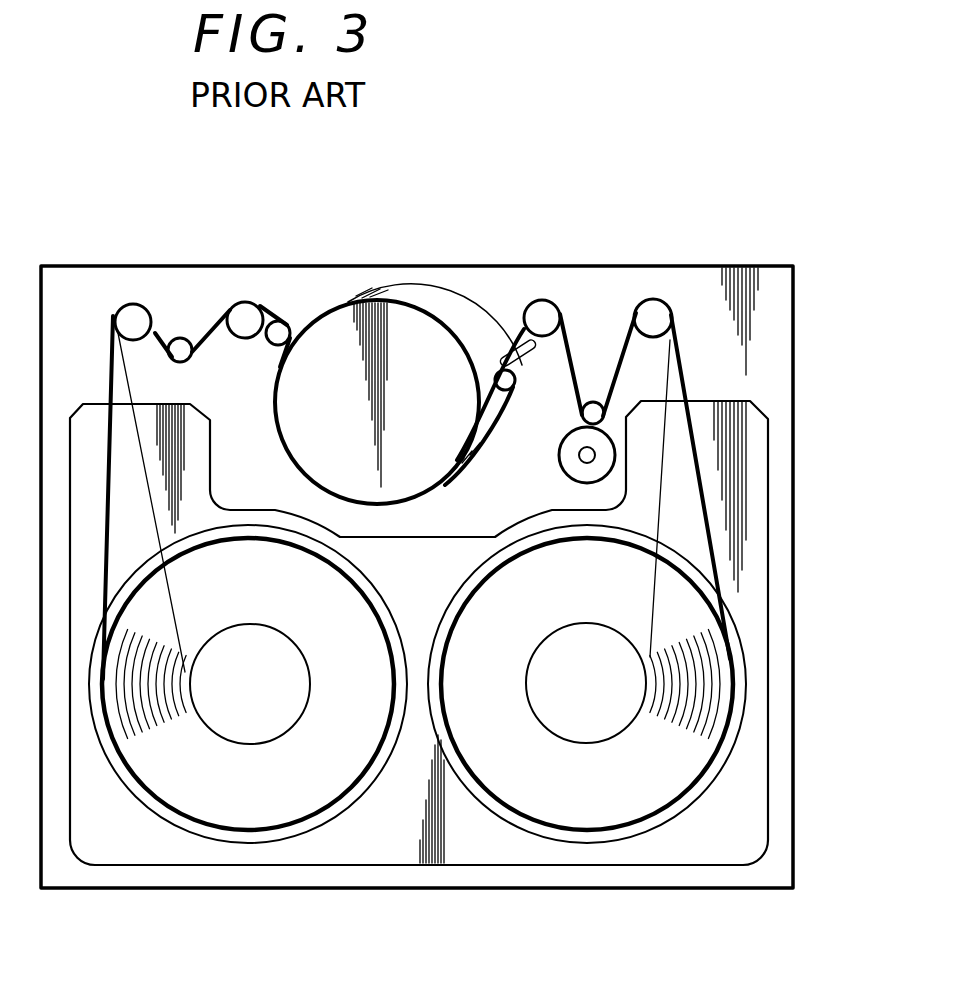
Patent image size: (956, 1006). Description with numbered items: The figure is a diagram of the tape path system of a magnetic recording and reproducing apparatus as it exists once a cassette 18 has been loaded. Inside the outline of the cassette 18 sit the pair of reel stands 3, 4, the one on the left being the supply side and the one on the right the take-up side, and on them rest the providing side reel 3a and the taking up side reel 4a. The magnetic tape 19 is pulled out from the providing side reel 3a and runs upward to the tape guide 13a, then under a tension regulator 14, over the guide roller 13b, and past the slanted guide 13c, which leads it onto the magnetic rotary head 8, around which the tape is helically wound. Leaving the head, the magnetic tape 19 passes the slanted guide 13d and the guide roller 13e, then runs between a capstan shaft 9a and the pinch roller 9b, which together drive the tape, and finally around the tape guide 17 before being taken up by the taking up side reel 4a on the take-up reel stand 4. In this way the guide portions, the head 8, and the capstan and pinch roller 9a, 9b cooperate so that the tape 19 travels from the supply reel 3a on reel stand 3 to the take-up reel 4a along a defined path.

The reel stand 3 is at (205, 840).
The providing side reel 3a is at (247, 818).
The reel stand 4 is at (545, 840).
The taking up side reel 4a is at (590, 812).
The magnetic rotary head 8 is at (432, 296).
The capstan shaft 9a is at (590, 404).
The pinch roller 9b is at (567, 440).
The tape guide 13a is at (135, 318).
The guide roller 13b is at (245, 318).
The slanted guide 13c is at (280, 332).
The slanted guide 13d is at (510, 338).
The guide roller 13e is at (543, 314).
The tension regulator 14 is at (180, 347).
The tape guide 17 is at (653, 318).
The cassette 18 is at (778, 540).
The magnetic tape 19 is at (670, 382).